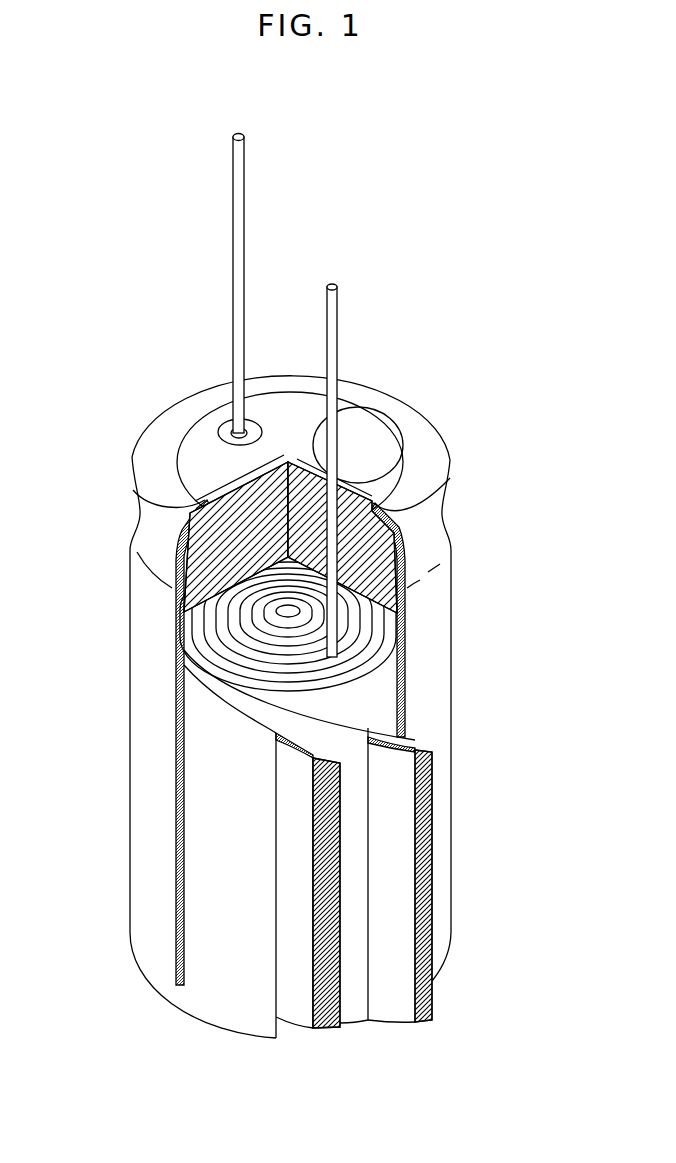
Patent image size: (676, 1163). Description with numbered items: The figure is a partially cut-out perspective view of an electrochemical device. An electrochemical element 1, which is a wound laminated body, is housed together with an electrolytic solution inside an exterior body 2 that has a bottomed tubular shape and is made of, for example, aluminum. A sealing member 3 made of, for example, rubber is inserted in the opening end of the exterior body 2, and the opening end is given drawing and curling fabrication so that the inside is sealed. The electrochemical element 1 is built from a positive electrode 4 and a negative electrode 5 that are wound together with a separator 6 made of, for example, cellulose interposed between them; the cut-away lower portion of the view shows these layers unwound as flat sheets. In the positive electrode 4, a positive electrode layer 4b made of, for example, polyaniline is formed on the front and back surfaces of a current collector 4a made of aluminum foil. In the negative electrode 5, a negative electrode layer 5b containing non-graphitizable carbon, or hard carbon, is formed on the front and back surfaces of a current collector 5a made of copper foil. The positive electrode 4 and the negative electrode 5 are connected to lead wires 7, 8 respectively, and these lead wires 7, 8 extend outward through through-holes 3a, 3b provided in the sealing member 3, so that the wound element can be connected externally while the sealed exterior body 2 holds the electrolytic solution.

The electrochemical element 1 is at (252, 647).
The exterior body 2 is at (442, 576).
The sealing member 3 is at (186, 550).
The through-hole 3a is at (233, 433).
The through-hole 3b is at (346, 489).
The positive electrode 4 is at (453, 879).
The current collector 4a is at (432, 776).
The positive electrode layer 4b is at (402, 818).
The negative electrode 5 is at (407, 885).
The current collector 5a is at (340, 867).
The negative electrode layer 5b is at (302, 898).
The separator 6 is at (358, 1012).
The lead wire 7 is at (245, 202).
The lead wire 8 is at (337, 305).